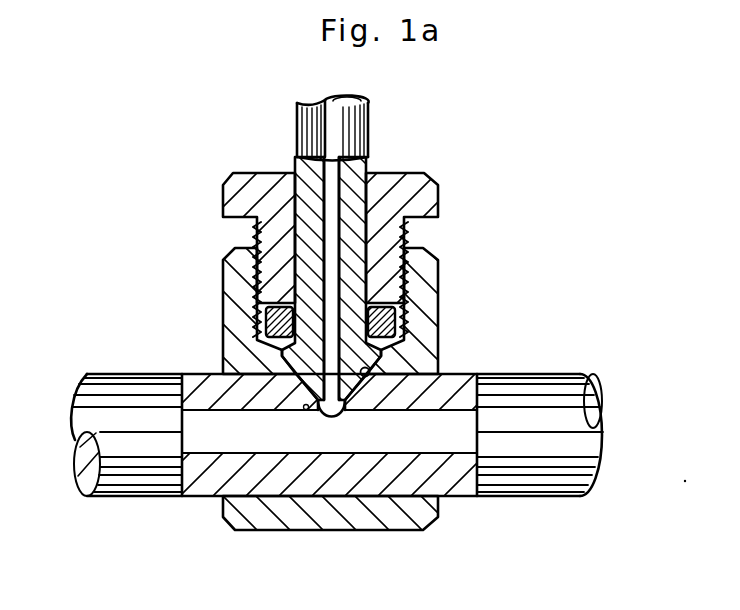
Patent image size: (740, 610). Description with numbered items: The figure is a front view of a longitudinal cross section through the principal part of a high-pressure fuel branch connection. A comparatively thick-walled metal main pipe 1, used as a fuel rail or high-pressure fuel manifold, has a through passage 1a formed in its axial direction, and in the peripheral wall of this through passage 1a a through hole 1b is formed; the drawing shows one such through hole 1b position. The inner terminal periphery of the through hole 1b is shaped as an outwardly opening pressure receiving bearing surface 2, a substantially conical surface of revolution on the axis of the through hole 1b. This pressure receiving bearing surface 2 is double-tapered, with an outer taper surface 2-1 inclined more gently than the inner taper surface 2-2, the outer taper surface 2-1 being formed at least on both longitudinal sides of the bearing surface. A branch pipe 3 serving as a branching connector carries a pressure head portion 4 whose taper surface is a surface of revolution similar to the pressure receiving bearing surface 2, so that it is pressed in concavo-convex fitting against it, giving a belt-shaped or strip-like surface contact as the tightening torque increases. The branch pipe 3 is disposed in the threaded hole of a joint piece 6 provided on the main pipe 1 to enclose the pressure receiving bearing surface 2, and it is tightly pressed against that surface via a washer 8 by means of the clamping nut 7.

The main pipe 1 is at (541, 473).
The through passage 1a is at (461, 437).
The through hole 1b is at (331, 418).
The pressure receiving bearing surface 2 is at (352, 405).
The outer taper surface 2-1 is at (369, 370).
The inner taper surface 2-2 is at (304, 410).
The branch pipe 3 is at (369, 128).
The pressure head portion 4 is at (291, 355).
The joint piece 6 is at (442, 300).
The clamping nut 7 is at (434, 195).
The washer 8 is at (394, 333).